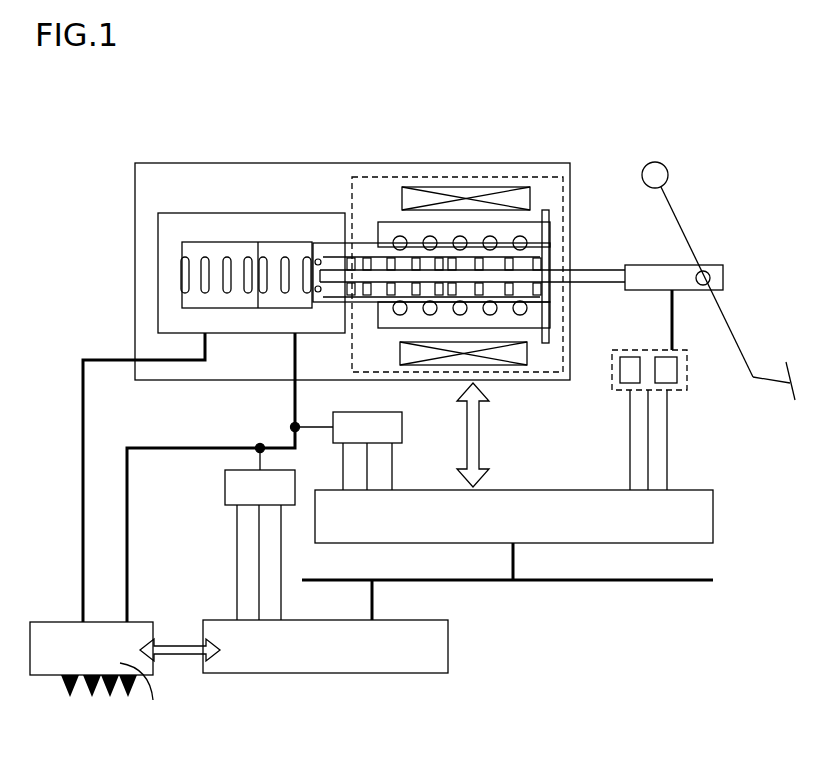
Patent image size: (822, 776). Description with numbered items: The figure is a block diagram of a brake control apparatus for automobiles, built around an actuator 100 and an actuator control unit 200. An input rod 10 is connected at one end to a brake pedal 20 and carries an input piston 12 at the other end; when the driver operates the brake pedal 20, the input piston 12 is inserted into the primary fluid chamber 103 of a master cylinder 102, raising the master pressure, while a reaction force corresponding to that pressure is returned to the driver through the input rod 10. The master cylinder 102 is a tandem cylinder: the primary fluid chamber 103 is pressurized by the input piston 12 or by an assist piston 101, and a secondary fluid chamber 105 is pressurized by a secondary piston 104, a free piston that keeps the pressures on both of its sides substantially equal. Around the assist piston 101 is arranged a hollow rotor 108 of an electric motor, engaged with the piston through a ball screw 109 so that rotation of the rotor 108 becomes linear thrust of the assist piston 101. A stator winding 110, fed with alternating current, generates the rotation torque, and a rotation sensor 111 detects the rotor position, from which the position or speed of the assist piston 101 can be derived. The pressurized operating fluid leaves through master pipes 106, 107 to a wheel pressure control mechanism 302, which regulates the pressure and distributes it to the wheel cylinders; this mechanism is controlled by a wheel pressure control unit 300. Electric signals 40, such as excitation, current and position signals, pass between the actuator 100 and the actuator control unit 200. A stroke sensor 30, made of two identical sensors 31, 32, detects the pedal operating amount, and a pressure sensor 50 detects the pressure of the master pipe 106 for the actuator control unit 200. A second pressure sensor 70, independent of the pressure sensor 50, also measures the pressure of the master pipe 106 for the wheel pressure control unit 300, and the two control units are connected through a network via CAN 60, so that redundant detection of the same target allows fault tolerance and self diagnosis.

The actuator 100 is at (550, 168).
The assist piston 101 is at (358, 247).
The master cylinder 102 is at (325, 222).
The primary fluid chamber 103 is at (293, 252).
The secondary piston 104 is at (258, 247).
The secondary fluid chamber 105 is at (215, 255).
The master pipe 106 is at (293, 367).
The master pipe 107 is at (205, 344).
The rotor 108 is at (388, 228).
The ball screw 109 is at (430, 238).
The stator winding 110 is at (503, 186).
The rotation sensor 111 is at (550, 216).
The input rod 10 is at (595, 272).
The input piston 12 is at (345, 275).
The brake pedal 20 is at (727, 322).
The stroke sensor 30 is at (688, 358).
The sensor 31 is at (677, 378).
The sensor 32 is at (618, 378).
The electric signals 40 is at (481, 435).
The pressure sensor 50 is at (385, 424).
The CAN 60 is at (588, 583).
The second pressure sensor 70 is at (226, 488).
The actuator control unit 200 is at (713, 518).
The wheel pressure control unit 300 is at (448, 651).
The wheel pressure control mechanism 302 is at (50, 622).